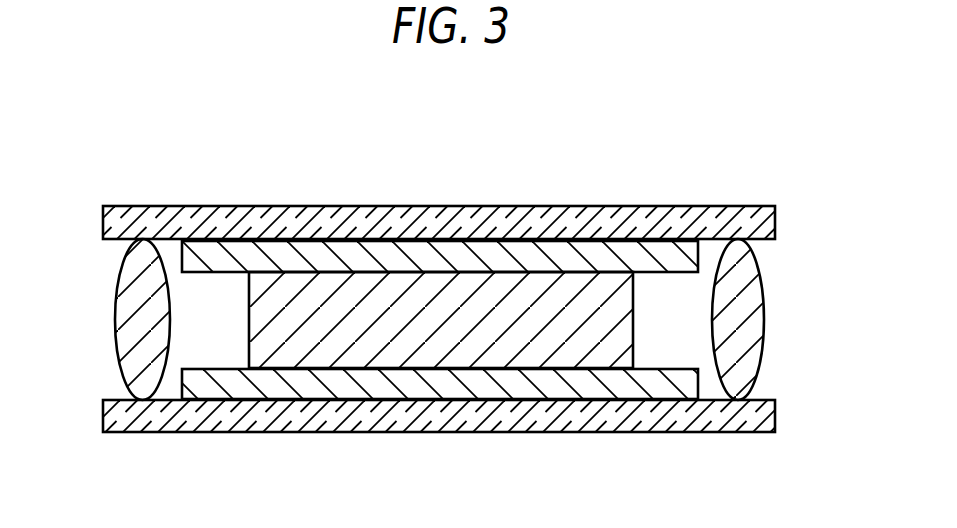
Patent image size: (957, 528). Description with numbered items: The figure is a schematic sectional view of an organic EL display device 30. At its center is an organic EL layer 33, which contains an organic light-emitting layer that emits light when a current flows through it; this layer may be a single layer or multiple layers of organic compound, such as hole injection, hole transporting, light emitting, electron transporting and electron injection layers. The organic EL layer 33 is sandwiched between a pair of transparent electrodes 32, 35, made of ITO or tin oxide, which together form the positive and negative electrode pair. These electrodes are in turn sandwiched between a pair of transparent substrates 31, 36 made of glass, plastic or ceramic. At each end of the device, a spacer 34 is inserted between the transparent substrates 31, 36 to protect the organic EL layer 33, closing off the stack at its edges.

The organic EL display device 30 is at (338, 186).
The transparent substrate 31 is at (767, 223).
The transparent electrode 32 is at (652, 257).
The organic EL layer 33 is at (265, 348).
The spacer 34 is at (138, 273).
The transparent electrode 35 is at (653, 383).
The transparent substrate 36 is at (767, 418).